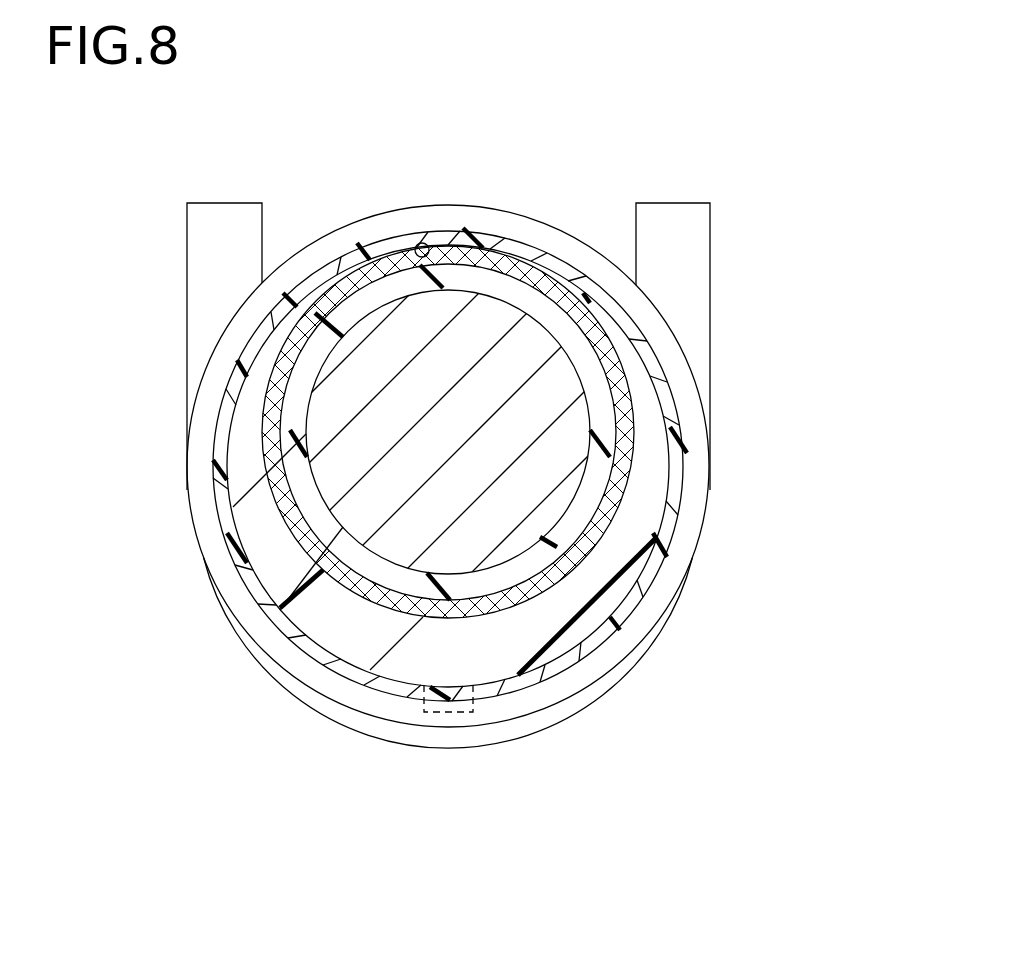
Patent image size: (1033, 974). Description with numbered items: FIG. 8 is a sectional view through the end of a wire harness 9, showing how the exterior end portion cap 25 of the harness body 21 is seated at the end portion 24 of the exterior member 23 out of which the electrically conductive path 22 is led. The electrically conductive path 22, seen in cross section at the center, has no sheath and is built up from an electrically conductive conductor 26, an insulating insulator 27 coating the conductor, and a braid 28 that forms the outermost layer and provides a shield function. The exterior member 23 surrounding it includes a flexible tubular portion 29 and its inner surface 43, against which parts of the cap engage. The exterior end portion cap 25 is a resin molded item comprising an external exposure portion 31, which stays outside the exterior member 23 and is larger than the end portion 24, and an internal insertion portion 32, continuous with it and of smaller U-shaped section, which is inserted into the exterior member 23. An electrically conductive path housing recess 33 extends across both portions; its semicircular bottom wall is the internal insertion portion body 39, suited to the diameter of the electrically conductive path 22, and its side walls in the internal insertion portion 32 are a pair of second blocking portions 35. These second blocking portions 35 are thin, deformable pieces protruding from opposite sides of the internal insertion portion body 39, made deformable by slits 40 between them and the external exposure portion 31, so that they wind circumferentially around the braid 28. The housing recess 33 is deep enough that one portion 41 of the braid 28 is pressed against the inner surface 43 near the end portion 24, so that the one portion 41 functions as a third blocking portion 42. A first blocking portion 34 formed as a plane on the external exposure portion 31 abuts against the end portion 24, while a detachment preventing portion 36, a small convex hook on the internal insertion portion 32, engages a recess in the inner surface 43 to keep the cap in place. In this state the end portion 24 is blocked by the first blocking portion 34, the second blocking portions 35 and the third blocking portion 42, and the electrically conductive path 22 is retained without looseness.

The bearing device 9 is at (652, 108).
The harness body 21 is at (422, 441).
The electrically conductive path 22 is at (598, 158).
The exterior member 23 is at (337, 709).
The end portion 24 is at (593, 680).
The exterior end portion cap 25 is at (691, 202).
The conductor 26 is at (493, 320).
The insulator 27 is at (540, 300).
The braid 28 is at (578, 302).
The flexible tubular portion 29 is at (333, 661).
The external exposure portion 31 is at (200, 265).
The internal insertion portion 32 is at (278, 573).
The electrically conductive path housing recess 33 is at (290, 672).
The first blocking portion 34 is at (425, 479).
The second blocking portions 35 is at (290, 325).
The detachment preventing portion 36 is at (450, 713).
The internal insertion portion body 39 is at (497, 665).
The slits 40 is at (255, 446).
The one portion 41 is at (444, 243).
The third blocking portion 42 is at (448, 354).
The inner surface 43 is at (412, 242).